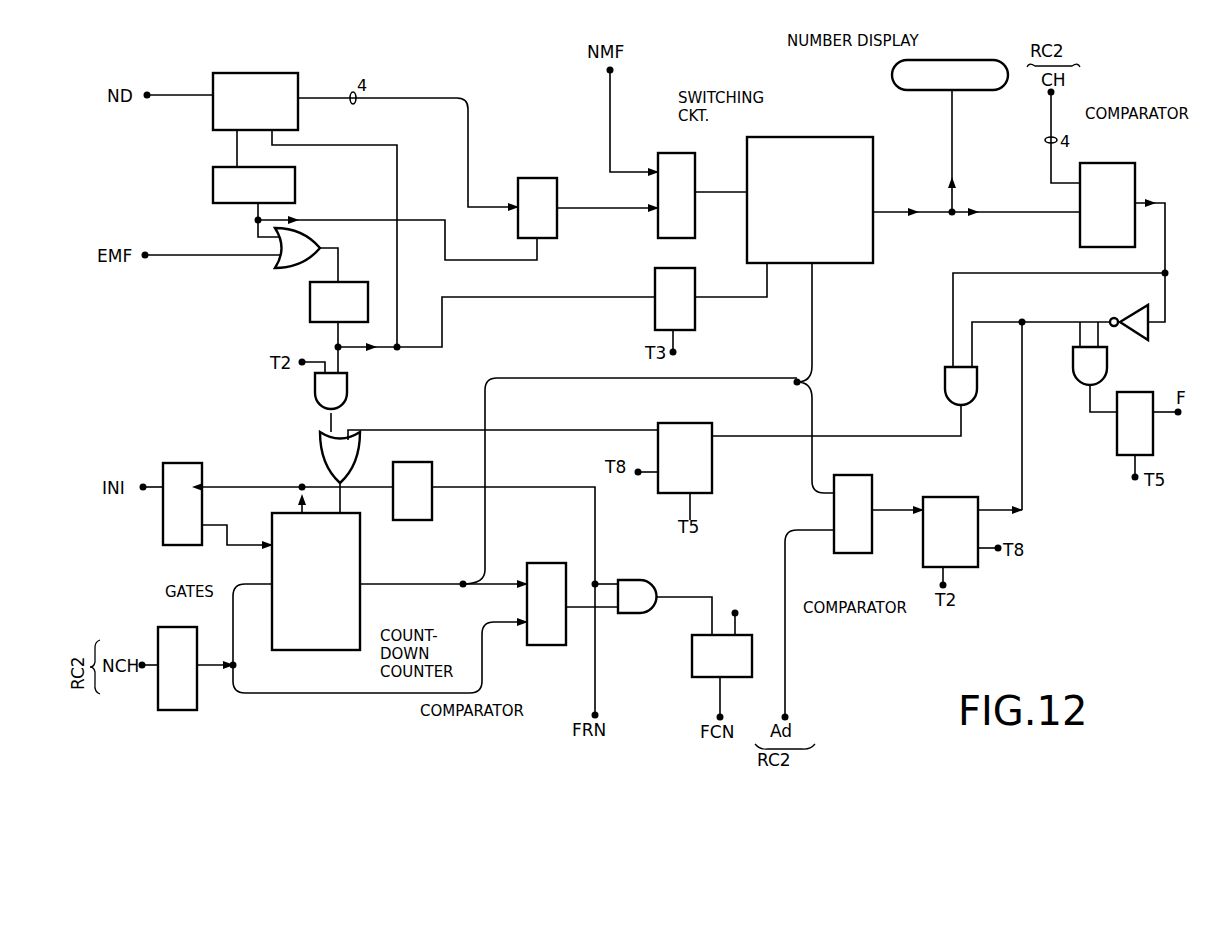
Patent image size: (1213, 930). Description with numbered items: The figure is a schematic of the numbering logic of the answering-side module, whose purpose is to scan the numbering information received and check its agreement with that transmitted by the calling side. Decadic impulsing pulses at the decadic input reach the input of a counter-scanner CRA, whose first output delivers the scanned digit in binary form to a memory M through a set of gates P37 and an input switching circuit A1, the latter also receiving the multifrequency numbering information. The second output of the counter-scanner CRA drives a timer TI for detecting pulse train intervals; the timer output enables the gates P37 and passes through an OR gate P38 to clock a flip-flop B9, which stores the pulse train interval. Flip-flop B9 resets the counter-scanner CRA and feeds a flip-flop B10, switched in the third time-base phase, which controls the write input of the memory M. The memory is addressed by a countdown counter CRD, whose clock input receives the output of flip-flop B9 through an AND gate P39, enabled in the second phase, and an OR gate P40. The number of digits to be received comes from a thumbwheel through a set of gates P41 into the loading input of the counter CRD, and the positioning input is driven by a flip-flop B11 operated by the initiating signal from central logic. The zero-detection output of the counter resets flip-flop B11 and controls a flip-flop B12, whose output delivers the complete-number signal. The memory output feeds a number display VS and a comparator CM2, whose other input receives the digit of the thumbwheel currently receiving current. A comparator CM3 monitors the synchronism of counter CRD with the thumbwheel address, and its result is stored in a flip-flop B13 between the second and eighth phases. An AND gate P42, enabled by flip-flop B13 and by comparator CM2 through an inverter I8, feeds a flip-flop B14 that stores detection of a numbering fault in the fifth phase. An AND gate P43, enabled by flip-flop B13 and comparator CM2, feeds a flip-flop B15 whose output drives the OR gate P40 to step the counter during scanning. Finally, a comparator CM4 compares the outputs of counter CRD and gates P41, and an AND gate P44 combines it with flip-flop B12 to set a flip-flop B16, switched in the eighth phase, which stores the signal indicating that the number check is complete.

The counter-scanner CRA is at (266, 57).
The timer TI is at (213, 185).
The OR gate P38 is at (283, 266).
The flip-flop B9 is at (310, 305).
The AND gate P39 is at (344, 398).
The OR gate P40 is at (322, 456).
The flip-flop B11 is at (170, 475).
The flip-flop B12 is at (412, 475).
The countdown counter CRD is at (378, 644).
The set of gates P41 is at (170, 634).
The set of gates P37 is at (530, 182).
The input switching circuit A1 is at (673, 160).
The memory M is at (855, 148).
The flip-flop B10 is at (655, 286).
The number display VS is at (895, 76).
The comparator CM2 is at (1112, 170).
The inverter I8 is at (1150, 322).
The AND gate P42 is at (1100, 372).
The AND gate P43 is at (948, 375).
The flip-flop B14 is at (1115, 450).
The flip-flop B13 is at (946, 500).
The flip-flop B15 is at (686, 431).
The flip-flop B16 is at (692, 664).
The AND gate P44 is at (636, 590).
The comparator CM4 is at (550, 646).
The comparator CM3 is at (868, 553).